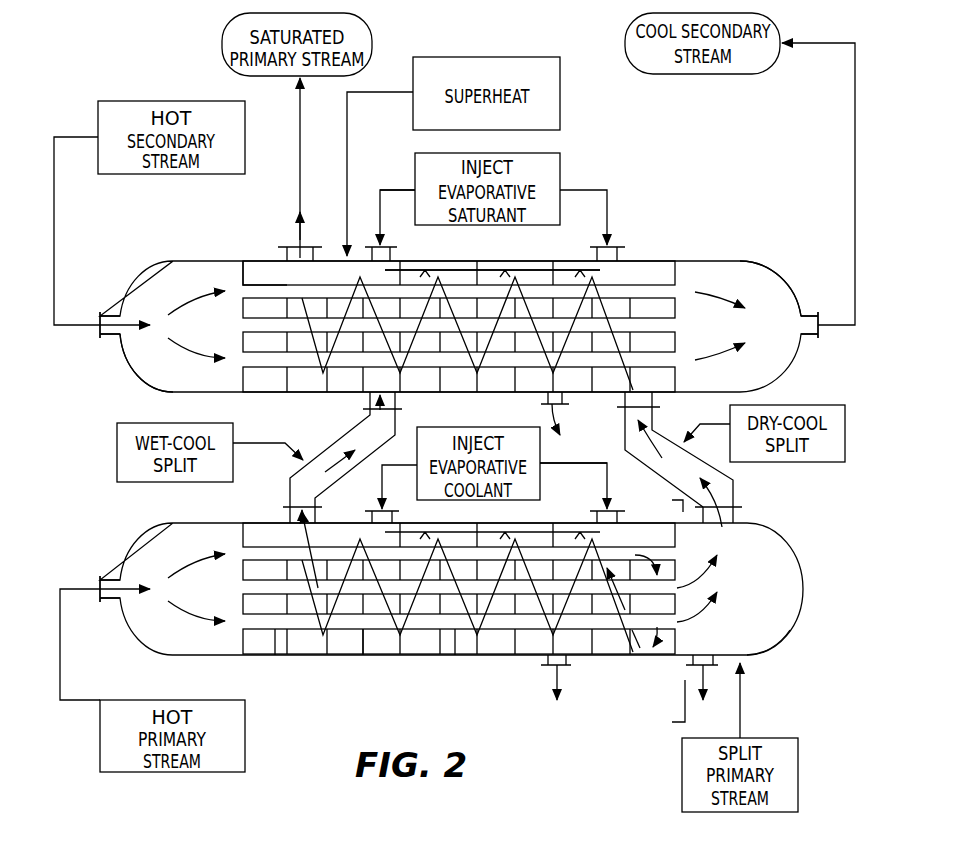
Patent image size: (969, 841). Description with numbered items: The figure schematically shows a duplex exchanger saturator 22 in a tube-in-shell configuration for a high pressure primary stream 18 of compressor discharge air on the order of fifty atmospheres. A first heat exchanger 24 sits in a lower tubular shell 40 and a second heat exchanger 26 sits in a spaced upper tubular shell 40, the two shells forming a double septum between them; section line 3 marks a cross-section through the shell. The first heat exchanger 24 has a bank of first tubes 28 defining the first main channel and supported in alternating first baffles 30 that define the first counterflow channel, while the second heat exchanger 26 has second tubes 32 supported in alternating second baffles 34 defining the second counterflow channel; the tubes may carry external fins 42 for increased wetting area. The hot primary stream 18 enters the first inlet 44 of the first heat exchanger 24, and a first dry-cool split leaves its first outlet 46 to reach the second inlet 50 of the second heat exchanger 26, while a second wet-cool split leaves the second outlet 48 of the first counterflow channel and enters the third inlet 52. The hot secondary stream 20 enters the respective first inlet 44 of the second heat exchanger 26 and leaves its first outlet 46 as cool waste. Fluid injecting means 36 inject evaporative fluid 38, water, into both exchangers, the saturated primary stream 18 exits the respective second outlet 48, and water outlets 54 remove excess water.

The section line 3 is at (671, 500).
The primary stream 18 is at (300, 160).
The secondary stream 20 is at (54, 222).
The duplex exchanger saturator 22 is at (730, 226).
The first heat exchanger 24 is at (128, 540).
The second heat exchanger 26 is at (128, 376).
The first tubes 28 is at (277, 632).
The first baffles 30 is at (365, 630).
The second tubes 32 is at (250, 261).
The second baffles 34 is at (487, 268).
The fluid injecting means 36 is at (562, 158).
The evaporative fluid 38 is at (612, 195).
The tubular shell 40 is at (762, 260).
The external fins 42 is at (645, 262).
The first inlet 44 is at (110, 313).
The first outlet 46 is at (801, 314).
The second outlet 48 is at (280, 247).
The second inlet 50 is at (655, 402).
The third inlet 52 is at (368, 400).
The water outlets 54 is at (543, 404).